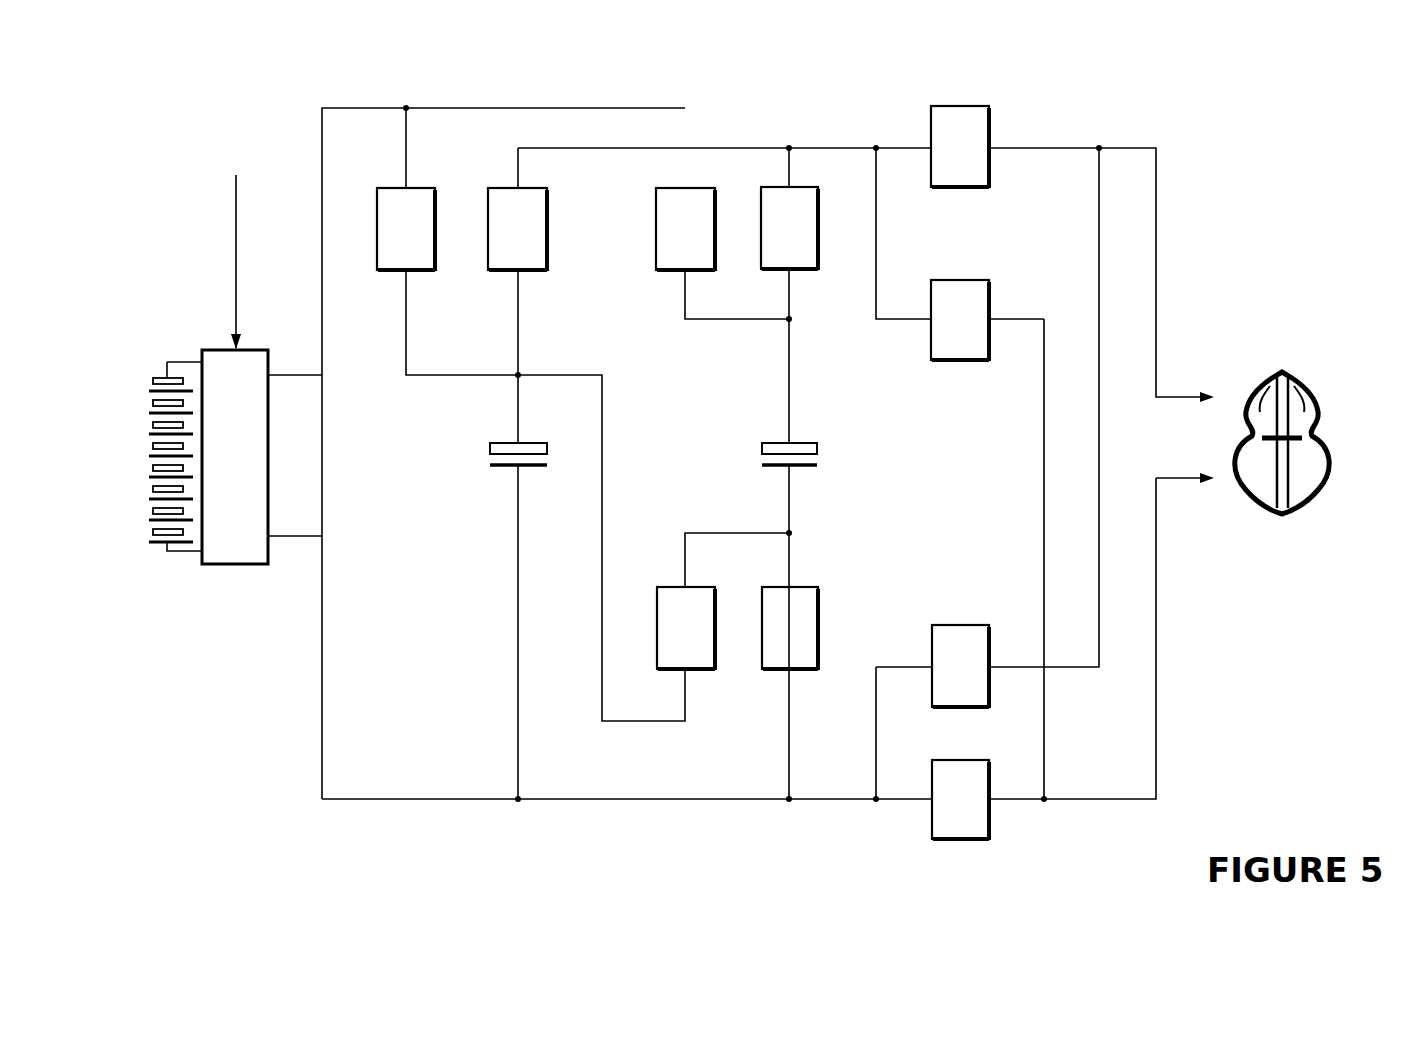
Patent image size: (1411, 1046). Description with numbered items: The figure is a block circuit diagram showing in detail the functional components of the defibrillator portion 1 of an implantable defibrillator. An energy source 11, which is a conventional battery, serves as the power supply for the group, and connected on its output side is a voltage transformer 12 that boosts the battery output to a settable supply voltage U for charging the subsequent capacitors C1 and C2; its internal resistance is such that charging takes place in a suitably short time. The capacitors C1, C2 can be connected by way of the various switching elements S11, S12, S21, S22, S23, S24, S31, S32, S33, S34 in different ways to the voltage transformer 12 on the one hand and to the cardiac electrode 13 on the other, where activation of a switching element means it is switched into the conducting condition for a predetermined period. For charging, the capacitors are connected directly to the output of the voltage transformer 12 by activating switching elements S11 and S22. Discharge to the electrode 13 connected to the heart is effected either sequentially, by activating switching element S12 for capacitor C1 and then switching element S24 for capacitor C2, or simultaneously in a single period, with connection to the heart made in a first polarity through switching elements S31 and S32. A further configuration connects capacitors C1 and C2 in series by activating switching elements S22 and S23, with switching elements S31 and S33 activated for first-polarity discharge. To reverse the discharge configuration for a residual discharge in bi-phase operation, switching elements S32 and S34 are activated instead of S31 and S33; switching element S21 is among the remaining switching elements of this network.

The defibrillator portion 1 is at (185, 132).
The supply voltage U is at (236, 245).
The energy source 11 is at (160, 378).
The voltage transformer 12 is at (268, 484).
The cardiac electrode 13 is at (1243, 443).
The switching element S11 is at (381, 272).
The switching element S12 is at (492, 272).
The switching element S21 is at (665, 272).
The switching element S22 is at (800, 271).
The switching element S23 is at (670, 587).
The switching element S24 is at (801, 587).
The switching element S31 is at (958, 105).
The switching element S32 is at (959, 362).
The switching element S33 is at (960, 625).
The switching element S34 is at (961, 840).
The capacitor C1 is at (495, 619).
The capacitor C2 is at (766, 619).